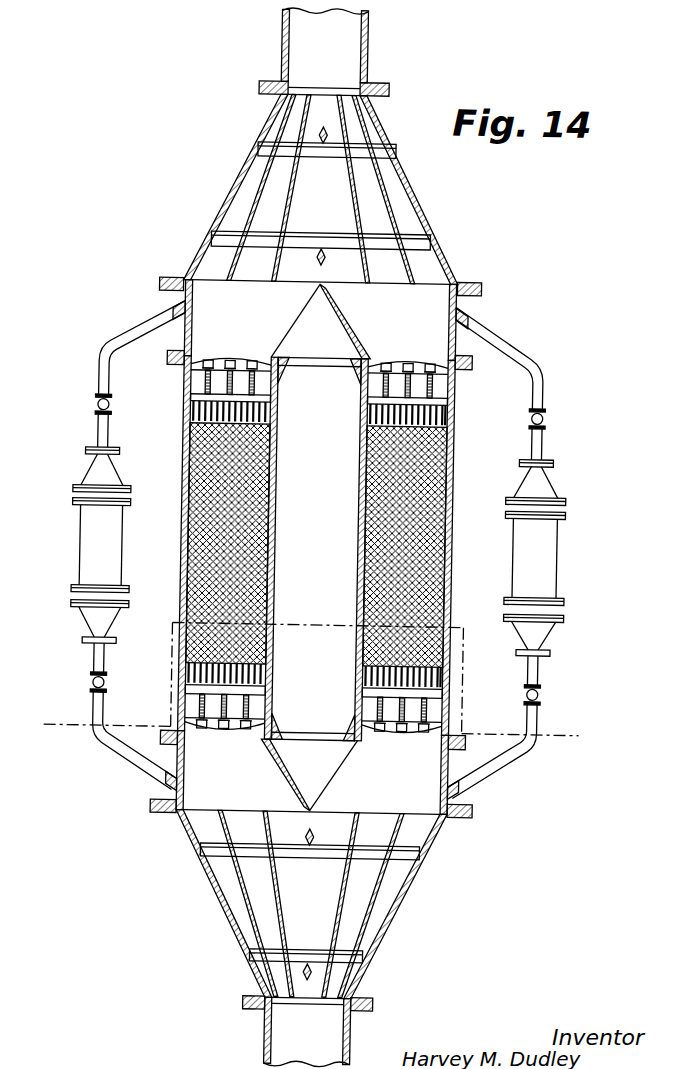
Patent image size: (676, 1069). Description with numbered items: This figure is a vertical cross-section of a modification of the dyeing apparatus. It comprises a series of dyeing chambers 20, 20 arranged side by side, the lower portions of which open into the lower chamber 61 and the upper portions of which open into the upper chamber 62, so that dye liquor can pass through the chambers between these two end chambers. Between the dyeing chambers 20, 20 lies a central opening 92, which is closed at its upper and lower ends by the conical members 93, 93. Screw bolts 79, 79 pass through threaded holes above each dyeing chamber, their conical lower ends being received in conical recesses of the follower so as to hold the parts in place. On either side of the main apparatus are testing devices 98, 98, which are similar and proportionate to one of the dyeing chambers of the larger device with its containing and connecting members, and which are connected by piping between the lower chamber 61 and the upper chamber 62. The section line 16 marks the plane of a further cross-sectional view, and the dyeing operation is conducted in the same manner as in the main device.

The section line 16- 16 is at (61, 713).
The dyeing chamber 20 is at (272, 468).
The chamber 61 is at (311, 774).
The chamber 62 is at (320, 324).
The screw bolt 79 is at (437, 393).
The central opening 92 is at (316, 549).
The conical member 93 is at (340, 328).
The testing device 98 is at (126, 545).